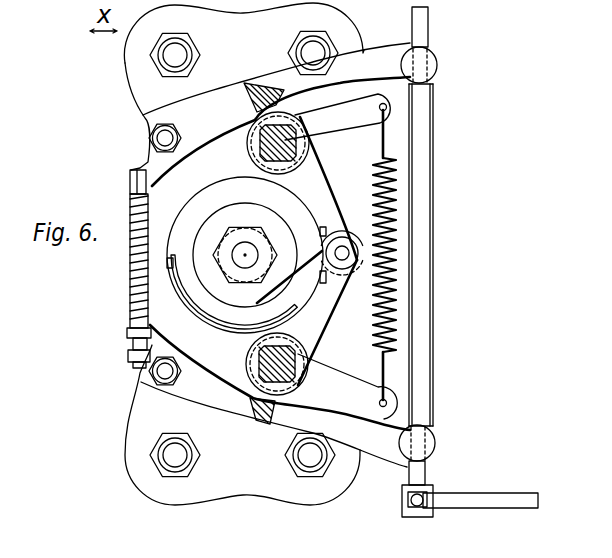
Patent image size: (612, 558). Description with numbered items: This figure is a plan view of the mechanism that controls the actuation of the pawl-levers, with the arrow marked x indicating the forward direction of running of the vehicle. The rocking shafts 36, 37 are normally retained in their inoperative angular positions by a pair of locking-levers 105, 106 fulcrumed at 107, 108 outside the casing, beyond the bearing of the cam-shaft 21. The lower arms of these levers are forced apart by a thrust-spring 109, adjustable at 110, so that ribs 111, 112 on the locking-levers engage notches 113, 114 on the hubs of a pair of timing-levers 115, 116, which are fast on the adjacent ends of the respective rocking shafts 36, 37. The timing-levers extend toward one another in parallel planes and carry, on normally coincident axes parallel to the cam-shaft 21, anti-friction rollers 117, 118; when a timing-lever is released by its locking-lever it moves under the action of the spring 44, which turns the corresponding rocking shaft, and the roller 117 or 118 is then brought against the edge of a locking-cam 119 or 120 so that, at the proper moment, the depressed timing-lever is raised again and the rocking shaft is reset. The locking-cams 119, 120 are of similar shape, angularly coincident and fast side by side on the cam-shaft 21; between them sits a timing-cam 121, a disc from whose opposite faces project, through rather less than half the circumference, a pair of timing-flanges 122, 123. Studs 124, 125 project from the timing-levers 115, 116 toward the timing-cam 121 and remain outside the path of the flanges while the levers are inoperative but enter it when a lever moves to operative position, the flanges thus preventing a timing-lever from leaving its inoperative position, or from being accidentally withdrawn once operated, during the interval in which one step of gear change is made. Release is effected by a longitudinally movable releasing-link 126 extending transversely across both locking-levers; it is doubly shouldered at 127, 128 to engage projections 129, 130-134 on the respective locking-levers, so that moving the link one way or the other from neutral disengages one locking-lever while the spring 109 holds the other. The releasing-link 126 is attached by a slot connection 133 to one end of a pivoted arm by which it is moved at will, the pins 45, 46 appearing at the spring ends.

The cam-shaft 21 is at (240, 250).
The rocking shaft 36 is at (300, 135).
The rocking shaft 37 is at (300, 386).
The spring 44 is at (362, 242).
The spring pin 45 is at (400, 107).
The spring pin 46 is at (391, 403).
The locking-lever 105 is at (217, 103).
The locking-lever 106 is at (138, 409).
The fulcrum 107 is at (163, 137).
The fulcrum 108 is at (155, 376).
The thrust-spring 109 is at (133, 260).
The adjustment of thrust-spring 110 is at (132, 340).
The rib 111 is at (257, 118).
The rib 112 is at (266, 424).
The notch 113 is at (256, 119).
The notch 114 is at (258, 395).
The timing-lever 115 is at (308, 175).
The timing-lever 116 is at (316, 354).
The anti-friction roller 117 is at (380, 218).
The anti-friction roller 118 is at (330, 279).
The locking-cam 119 is at (222, 196).
The locking-cam 120 is at (283, 305).
The timing-cam 121 is at (183, 208).
The timing-flange 122 is at (187, 312).
The timing-flange 123 is at (249, 330).
The stud 124 is at (323, 230).
The stud 125 is at (325, 276).
The releasing-link 126 is at (413, 330).
The shoulder 127 is at (433, 88).
The shoulder 128 is at (431, 431).
The projection 129 is at (436, 55).
The projection and arm 130-134 is at (505, 483).
The slot connection 133 is at (410, 496).